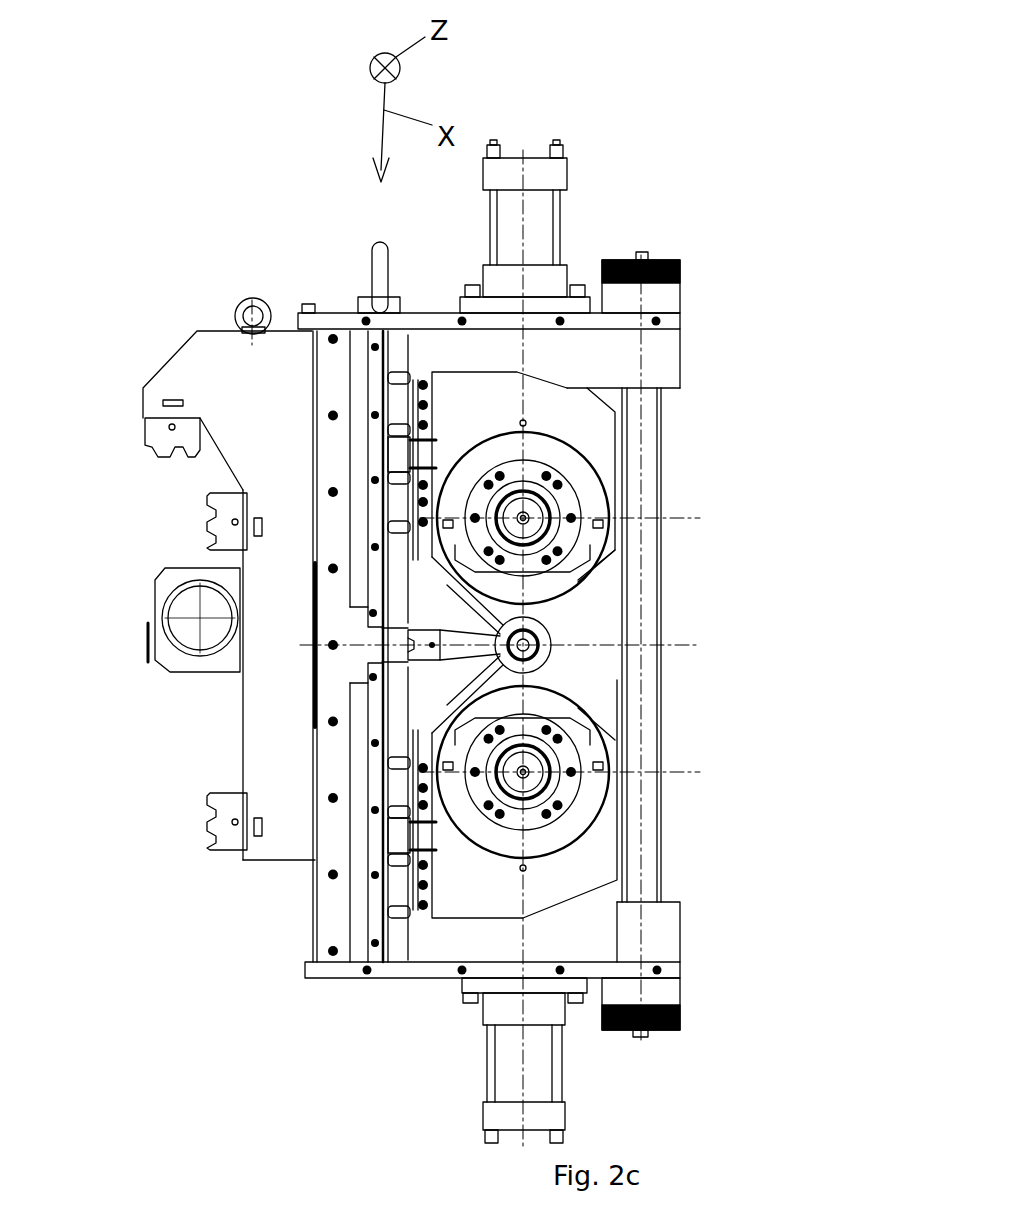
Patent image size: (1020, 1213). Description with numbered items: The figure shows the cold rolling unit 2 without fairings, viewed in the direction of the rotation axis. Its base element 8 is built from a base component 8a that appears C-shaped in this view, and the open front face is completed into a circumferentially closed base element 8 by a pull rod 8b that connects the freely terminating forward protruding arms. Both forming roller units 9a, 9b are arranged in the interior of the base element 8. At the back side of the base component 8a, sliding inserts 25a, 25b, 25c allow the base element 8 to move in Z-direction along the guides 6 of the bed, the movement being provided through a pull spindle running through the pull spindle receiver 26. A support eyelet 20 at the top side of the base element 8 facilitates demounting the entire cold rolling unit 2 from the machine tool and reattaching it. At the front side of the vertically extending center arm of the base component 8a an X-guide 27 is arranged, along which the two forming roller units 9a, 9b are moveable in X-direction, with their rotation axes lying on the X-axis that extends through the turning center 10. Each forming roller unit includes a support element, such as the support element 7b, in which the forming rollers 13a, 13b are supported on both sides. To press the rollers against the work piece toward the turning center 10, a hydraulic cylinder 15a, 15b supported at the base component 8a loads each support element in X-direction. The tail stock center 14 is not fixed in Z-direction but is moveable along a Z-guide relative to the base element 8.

The cold rolling unit 2 is at (198, 260).
The guides 6 is at (408, 645).
The support element 7b is at (550, 875).
The base element 8 is at (288, 1006).
The base component 8a is at (665, 362).
The pull rod 8b is at (655, 624).
The forming roller unit 9a is at (705, 545).
The forming roller unit 9b is at (705, 780).
The turning center 10 is at (537, 648).
The forming roller 13a is at (524, 496).
The forming roller 13b is at (522, 812).
The tail stock center 14 is at (634, 658).
The hydraulic cylinder 15a is at (535, 247).
The hydraulic cylinder 15b is at (543, 1055).
The support eyelet 20 is at (377, 282).
The sliding insert 25a is at (213, 842).
The sliding insert 25b is at (208, 508).
The sliding insert 25c is at (150, 432).
The pull spindle receiver 26 is at (183, 660).
The X-guide 27 is at (393, 335).